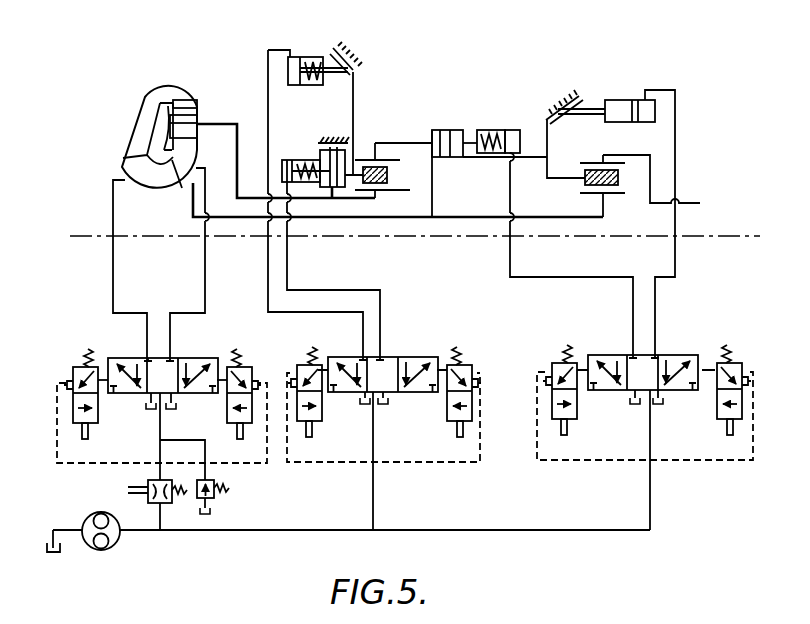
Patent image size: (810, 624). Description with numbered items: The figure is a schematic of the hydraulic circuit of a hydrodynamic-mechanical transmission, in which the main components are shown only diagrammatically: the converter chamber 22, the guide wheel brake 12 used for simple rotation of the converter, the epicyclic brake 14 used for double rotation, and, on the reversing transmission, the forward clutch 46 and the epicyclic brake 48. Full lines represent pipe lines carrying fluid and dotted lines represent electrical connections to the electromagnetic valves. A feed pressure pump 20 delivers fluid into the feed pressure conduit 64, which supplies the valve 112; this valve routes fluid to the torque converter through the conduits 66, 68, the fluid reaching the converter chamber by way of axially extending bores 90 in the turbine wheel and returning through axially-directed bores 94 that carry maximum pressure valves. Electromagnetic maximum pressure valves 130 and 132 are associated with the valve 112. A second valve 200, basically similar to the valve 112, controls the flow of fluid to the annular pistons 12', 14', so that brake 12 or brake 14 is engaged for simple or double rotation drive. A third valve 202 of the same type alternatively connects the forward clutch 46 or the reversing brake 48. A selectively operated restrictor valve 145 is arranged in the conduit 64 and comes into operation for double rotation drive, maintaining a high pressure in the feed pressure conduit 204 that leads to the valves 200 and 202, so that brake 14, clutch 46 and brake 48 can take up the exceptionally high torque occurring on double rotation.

The converter chamber 22 is at (193, 90).
The axially-directed bores 94 is at (122, 178).
The axially extending bores 90 is at (203, 172).
The connecting conduit 68 is at (113, 280).
The connecting conduit 66 is at (205, 280).
The annular piston 14' is at (308, 52).
The epicyclic brake 14 is at (362, 53).
The annular piston 12' is at (326, 224).
The guide wheel brake 12 is at (315, 150).
The forward clutch 46 is at (450, 129).
The epicyclic brake 48 is at (562, 86).
The electromagnetic maximum pressure valve 130 is at (76, 356).
The valve 112 is at (179, 355).
The electromagnetic maximum pressure valve 132 is at (257, 356).
The valve 200 is at (399, 347).
The valve 202 is at (673, 347).
The restrictor valve 145 is at (147, 485).
The feed pressure conduit 204 is at (420, 528).
The feed pressure conduit 64 is at (162, 531).
The feed pressure pump 20 is at (120, 539).